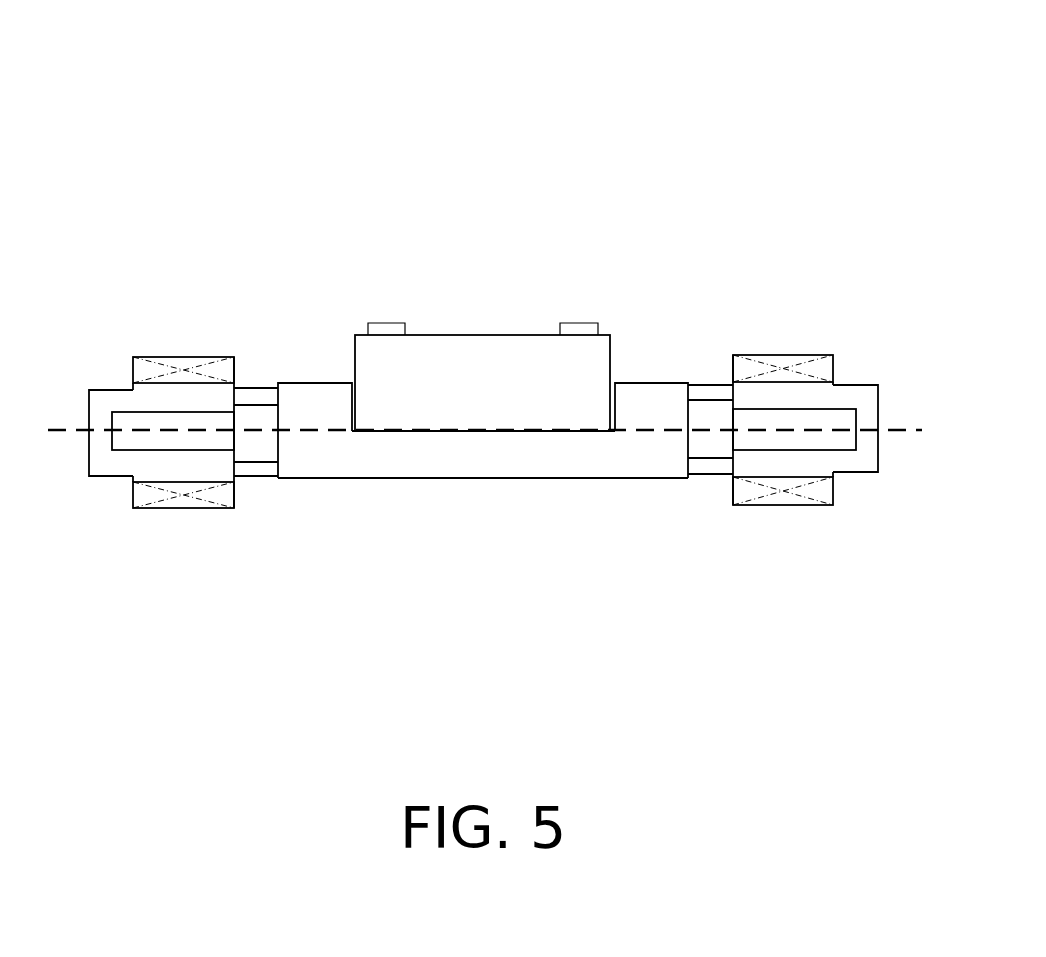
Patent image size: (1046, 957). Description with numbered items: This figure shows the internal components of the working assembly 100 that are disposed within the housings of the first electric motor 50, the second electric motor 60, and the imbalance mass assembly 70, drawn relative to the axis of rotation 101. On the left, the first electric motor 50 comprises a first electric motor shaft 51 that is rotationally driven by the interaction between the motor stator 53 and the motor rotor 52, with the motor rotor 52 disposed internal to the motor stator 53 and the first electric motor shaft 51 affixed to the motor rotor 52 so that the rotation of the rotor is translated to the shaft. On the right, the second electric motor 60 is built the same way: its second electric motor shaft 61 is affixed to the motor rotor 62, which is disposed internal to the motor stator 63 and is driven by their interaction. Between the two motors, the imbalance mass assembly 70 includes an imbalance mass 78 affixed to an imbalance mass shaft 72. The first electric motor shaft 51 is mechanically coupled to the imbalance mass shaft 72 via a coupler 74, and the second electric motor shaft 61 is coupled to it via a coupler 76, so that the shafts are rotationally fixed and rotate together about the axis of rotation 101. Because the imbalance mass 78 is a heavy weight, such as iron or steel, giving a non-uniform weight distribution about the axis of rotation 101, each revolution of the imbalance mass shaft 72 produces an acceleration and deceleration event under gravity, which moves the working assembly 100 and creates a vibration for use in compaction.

The working assembly 100 is at (665, 49).
The axis of rotation 101 is at (463, 508).
The first electric motor 50 is at (141, 440).
The first electric motor shaft 51 is at (141, 485).
The motor rotor 52 is at (149, 376).
The motor stator 53 is at (164, 532).
The second electric motor 60 is at (827, 438).
The second electric motor shaft 61 is at (827, 482).
The motor rotor 62 is at (817, 372).
The motor stator 63 is at (801, 528).
The imbalance mass assembly 70 is at (483, 374).
The imbalance mass shaft 72 is at (483, 481).
The coupler 74 is at (234, 482).
The coupler 76 is at (688, 465).
The imbalance mass 78 is at (481, 323).